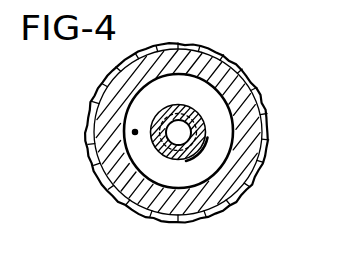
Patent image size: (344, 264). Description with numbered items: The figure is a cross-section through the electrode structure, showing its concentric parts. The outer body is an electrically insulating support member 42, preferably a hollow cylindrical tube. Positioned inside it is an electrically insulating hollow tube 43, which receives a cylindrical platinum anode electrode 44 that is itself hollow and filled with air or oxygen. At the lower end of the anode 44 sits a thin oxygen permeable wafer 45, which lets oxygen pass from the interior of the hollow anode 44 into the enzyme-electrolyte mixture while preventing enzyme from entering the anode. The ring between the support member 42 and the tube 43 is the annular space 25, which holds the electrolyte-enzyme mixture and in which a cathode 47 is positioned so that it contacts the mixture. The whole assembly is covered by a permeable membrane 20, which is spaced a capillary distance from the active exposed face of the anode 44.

The permeable membrane 20 is at (121, 193).
The annular space 25 is at (205, 175).
The support member 42 is at (238, 100).
The tube 43 is at (171, 150).
The anode electrode 44 is at (192, 142).
The oxygen permeable wafer 45 is at (173, 118).
The cathode 47 is at (135, 132).